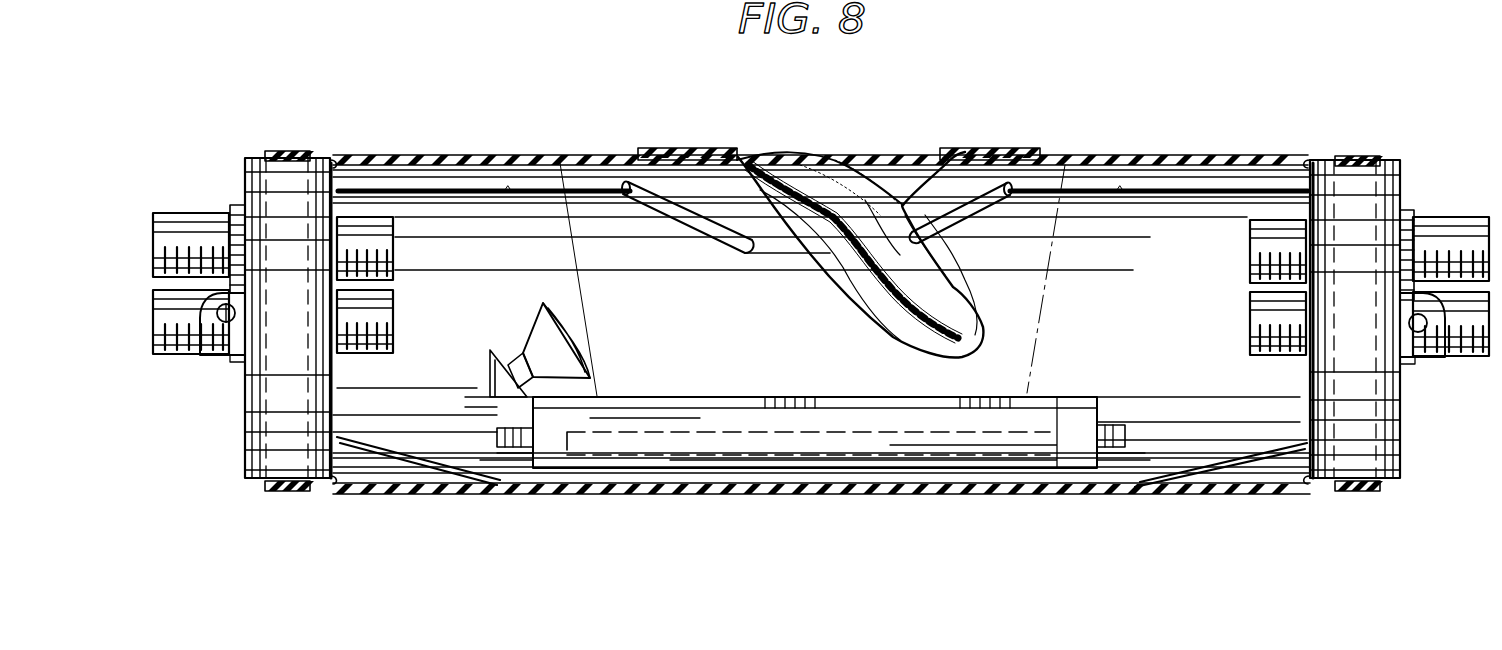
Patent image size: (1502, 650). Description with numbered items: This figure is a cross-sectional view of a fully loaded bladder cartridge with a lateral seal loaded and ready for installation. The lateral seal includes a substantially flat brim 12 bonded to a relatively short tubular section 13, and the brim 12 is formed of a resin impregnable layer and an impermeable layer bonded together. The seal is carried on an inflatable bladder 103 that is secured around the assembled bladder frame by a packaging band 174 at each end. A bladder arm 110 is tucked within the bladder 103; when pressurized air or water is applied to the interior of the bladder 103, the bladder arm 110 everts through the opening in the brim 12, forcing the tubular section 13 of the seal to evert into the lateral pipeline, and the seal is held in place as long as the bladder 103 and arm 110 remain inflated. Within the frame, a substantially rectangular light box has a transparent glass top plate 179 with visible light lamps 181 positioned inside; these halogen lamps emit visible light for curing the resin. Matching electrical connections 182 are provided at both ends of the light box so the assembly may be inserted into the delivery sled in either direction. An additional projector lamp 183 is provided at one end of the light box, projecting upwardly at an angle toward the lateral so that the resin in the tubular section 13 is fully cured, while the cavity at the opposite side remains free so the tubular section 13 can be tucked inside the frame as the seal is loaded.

The brim 12 is at (704, 148).
The tubular section 13 is at (848, 170).
The bladder 103 is at (470, 151).
The bladder arm 110 is at (978, 166).
The packaging band 174 is at (297, 152).
The transparent glass top plate 179 is at (742, 403).
The visible light lamps 181 is at (897, 440).
The electrical connections 182 is at (517, 440).
The projector lamp 183 is at (590, 348).